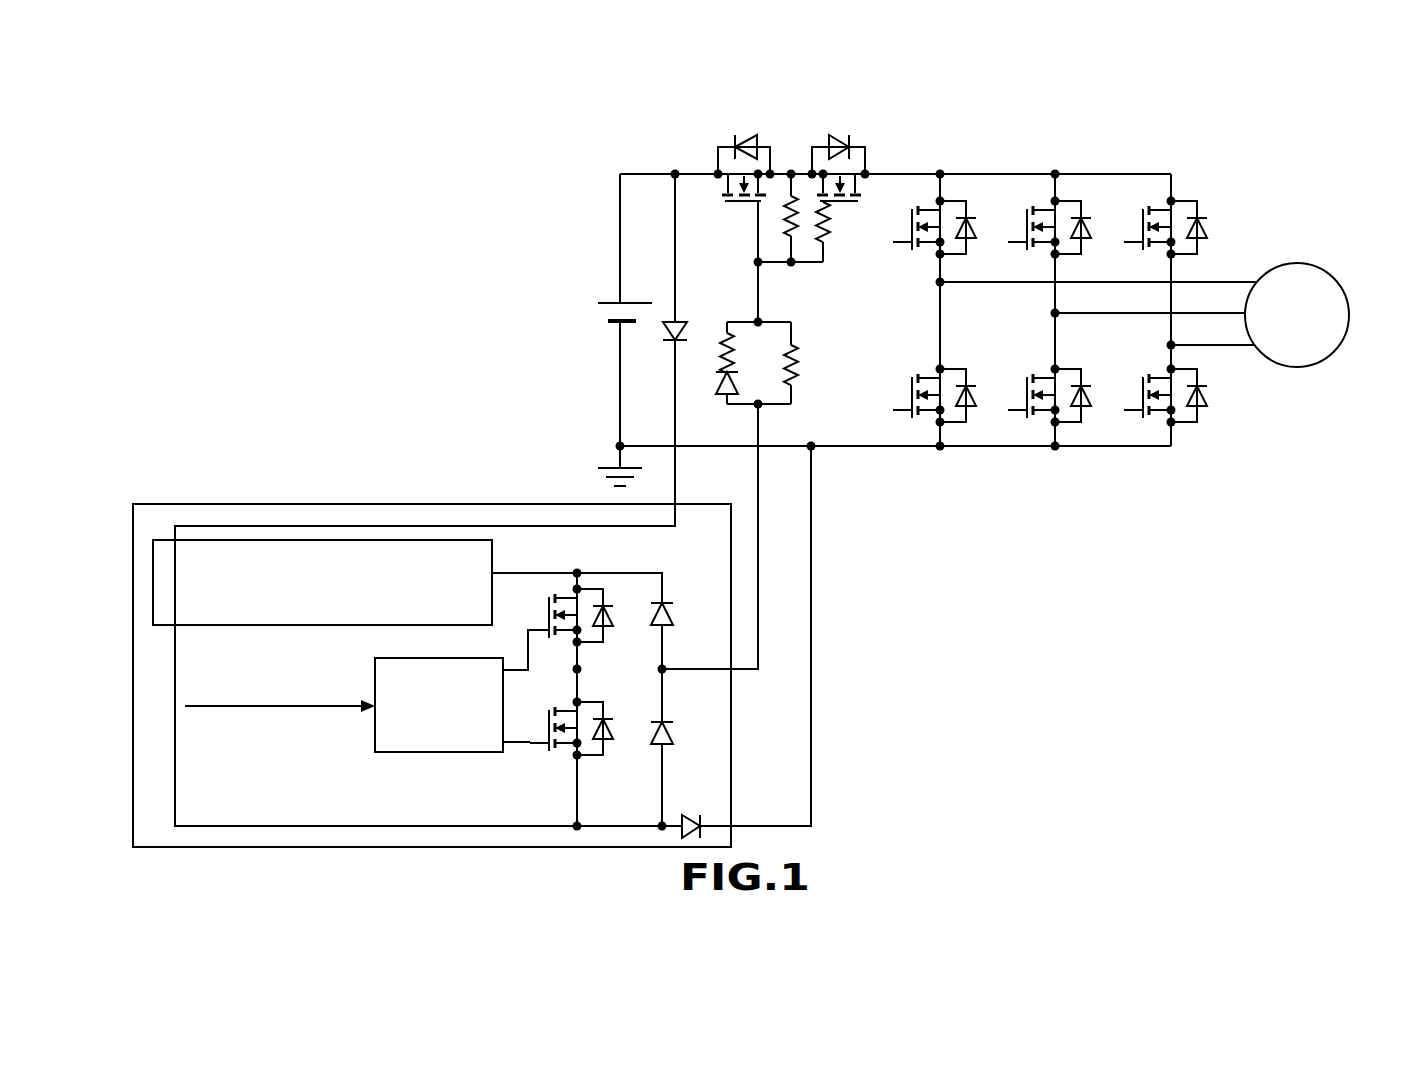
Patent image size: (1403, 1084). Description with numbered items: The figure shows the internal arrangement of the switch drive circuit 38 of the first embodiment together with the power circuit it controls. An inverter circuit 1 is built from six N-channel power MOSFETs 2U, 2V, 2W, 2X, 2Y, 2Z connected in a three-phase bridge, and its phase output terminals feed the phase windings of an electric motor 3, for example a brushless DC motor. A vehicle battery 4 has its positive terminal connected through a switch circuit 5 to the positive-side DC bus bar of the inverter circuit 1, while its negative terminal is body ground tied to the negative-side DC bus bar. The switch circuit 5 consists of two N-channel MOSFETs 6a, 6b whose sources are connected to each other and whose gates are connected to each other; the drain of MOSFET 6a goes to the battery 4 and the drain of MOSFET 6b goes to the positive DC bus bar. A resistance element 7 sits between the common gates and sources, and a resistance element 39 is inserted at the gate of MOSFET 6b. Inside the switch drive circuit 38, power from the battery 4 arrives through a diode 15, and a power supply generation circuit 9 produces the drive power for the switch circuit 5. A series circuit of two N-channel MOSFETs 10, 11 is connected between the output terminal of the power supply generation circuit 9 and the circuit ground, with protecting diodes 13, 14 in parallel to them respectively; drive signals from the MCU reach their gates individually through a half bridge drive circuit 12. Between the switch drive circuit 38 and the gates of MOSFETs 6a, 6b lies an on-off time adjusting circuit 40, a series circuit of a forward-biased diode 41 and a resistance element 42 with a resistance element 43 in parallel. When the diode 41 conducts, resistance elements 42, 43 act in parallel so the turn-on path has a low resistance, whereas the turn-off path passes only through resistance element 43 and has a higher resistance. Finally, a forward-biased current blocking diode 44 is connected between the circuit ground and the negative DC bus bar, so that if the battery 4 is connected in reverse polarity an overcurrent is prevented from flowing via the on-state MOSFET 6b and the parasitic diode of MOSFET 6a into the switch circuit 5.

The inverter circuit 1 is at (1075, 273).
The power MOSFET 2U is at (912, 257).
The power MOSFET 2V is at (1028, 250).
The power MOSFET 2W is at (1145, 252).
The power MOSFET 2X is at (913, 372).
The power MOSFET 2Y is at (1027, 372).
The power MOSFET 2Z is at (1144, 380).
The electric motor 3 is at (1334, 355).
The battery 4 is at (600, 316).
The switch circuit 5 is at (781, 228).
The N-channel MOSFET 6a is at (741, 208).
The N-channel MOSFET 6b is at (840, 205).
The resistance element 7 is at (796, 232).
The power supply generation circuit 9 is at (494, 555).
The N-channel MOSFET 10 is at (546, 616).
The N-channel MOSFET 11 is at (557, 752).
The half bridge drive circuit 12 is at (425, 756).
The protecting diode 13 is at (673, 608).
The protecting diode 14 is at (673, 728).
The diode 15 is at (664, 334).
The switch drive circuit 38 is at (432, 650).
The resistance element 39 is at (833, 232).
The on-off time adjusting circuit 40 is at (772, 492).
The diode 41 is at (712, 384).
The resistance element 42 is at (715, 344).
The resistance element 43 is at (803, 364).
The diode 44 is at (694, 810).